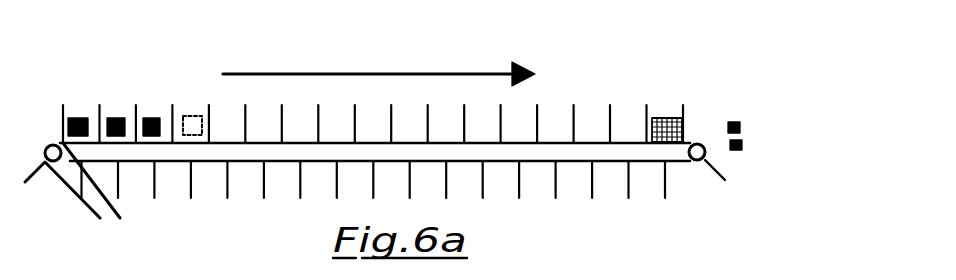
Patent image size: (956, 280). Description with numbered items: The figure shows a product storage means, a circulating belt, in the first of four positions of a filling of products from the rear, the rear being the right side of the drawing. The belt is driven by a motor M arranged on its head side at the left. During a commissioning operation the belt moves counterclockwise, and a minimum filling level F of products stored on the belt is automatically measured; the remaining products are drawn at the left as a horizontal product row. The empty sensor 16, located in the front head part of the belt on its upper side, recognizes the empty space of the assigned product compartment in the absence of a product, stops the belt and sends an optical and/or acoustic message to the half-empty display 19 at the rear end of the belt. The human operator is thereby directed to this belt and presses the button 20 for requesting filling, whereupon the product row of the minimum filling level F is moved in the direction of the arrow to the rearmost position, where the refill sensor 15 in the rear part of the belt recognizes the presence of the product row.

The refill sensor 15 is at (668, 118).
The empty sensor 16 is at (196, 112).
The half-empty display 19 is at (735, 122).
The button for requesting filling 20 is at (736, 150).
The minimum filling level F is at (114, 89).
The motor M is at (79, 199).